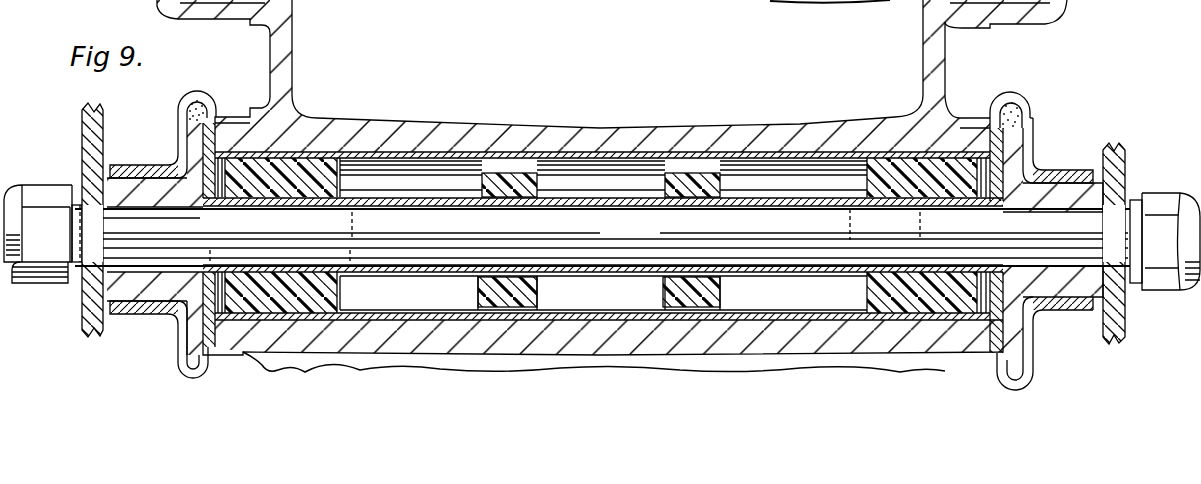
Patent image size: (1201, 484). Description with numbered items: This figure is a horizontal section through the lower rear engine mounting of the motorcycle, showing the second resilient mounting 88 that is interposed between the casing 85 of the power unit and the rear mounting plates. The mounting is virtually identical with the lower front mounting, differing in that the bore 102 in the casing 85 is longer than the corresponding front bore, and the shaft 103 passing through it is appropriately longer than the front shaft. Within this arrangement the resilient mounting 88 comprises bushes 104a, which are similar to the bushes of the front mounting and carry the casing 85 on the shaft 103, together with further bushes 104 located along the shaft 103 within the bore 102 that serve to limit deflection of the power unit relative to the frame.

The casing 85 is at (945, 371).
The second resilient mounting 88 is at (847, 121).
The bore 102 is at (766, 150).
The shaft 103 is at (602, 237).
The bushes 104 is at (510, 182).
The bushes 104a is at (897, 185).